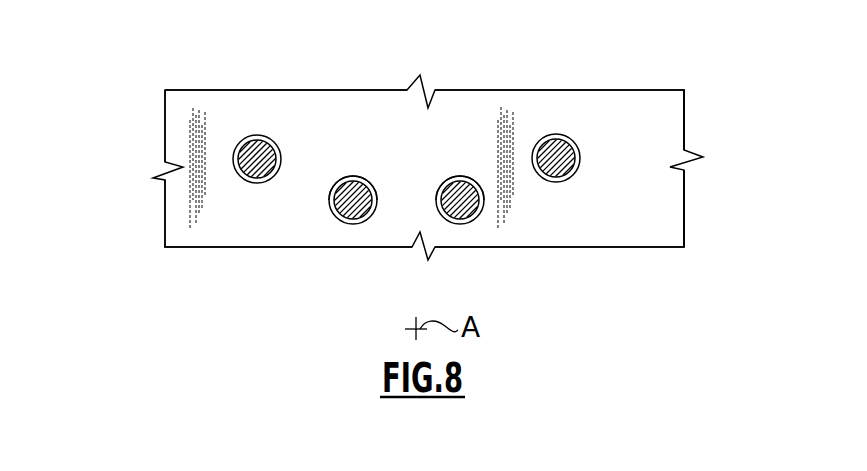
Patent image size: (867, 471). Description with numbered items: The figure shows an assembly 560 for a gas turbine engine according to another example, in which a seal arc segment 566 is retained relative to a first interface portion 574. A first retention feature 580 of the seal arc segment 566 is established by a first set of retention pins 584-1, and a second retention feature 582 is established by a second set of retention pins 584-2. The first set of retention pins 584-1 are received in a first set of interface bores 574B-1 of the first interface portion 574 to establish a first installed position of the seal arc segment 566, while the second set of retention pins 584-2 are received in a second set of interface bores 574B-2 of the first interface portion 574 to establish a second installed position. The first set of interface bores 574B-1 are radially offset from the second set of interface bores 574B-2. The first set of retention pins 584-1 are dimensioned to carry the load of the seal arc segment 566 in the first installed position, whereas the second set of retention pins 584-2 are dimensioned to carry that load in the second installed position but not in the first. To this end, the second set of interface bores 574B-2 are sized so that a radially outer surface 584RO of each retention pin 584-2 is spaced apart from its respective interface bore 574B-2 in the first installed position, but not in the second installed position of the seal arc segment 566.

The assembly 560 is at (170, 88).
The seal arc segment 566 is at (685, 123).
The first interface portion 574 is at (657, 200).
The first set of interface bores 574B-1 is at (238, 148).
The second set of interface bores 574B-2 is at (473, 226).
The first retention feature 580 is at (227, 143).
The second retention feature 582 is at (313, 203).
The first set of retention pins 584-1 is at (265, 136).
The second set of retention pins 584-2 is at (455, 188).
The radially outer surface 584RO is at (460, 176).